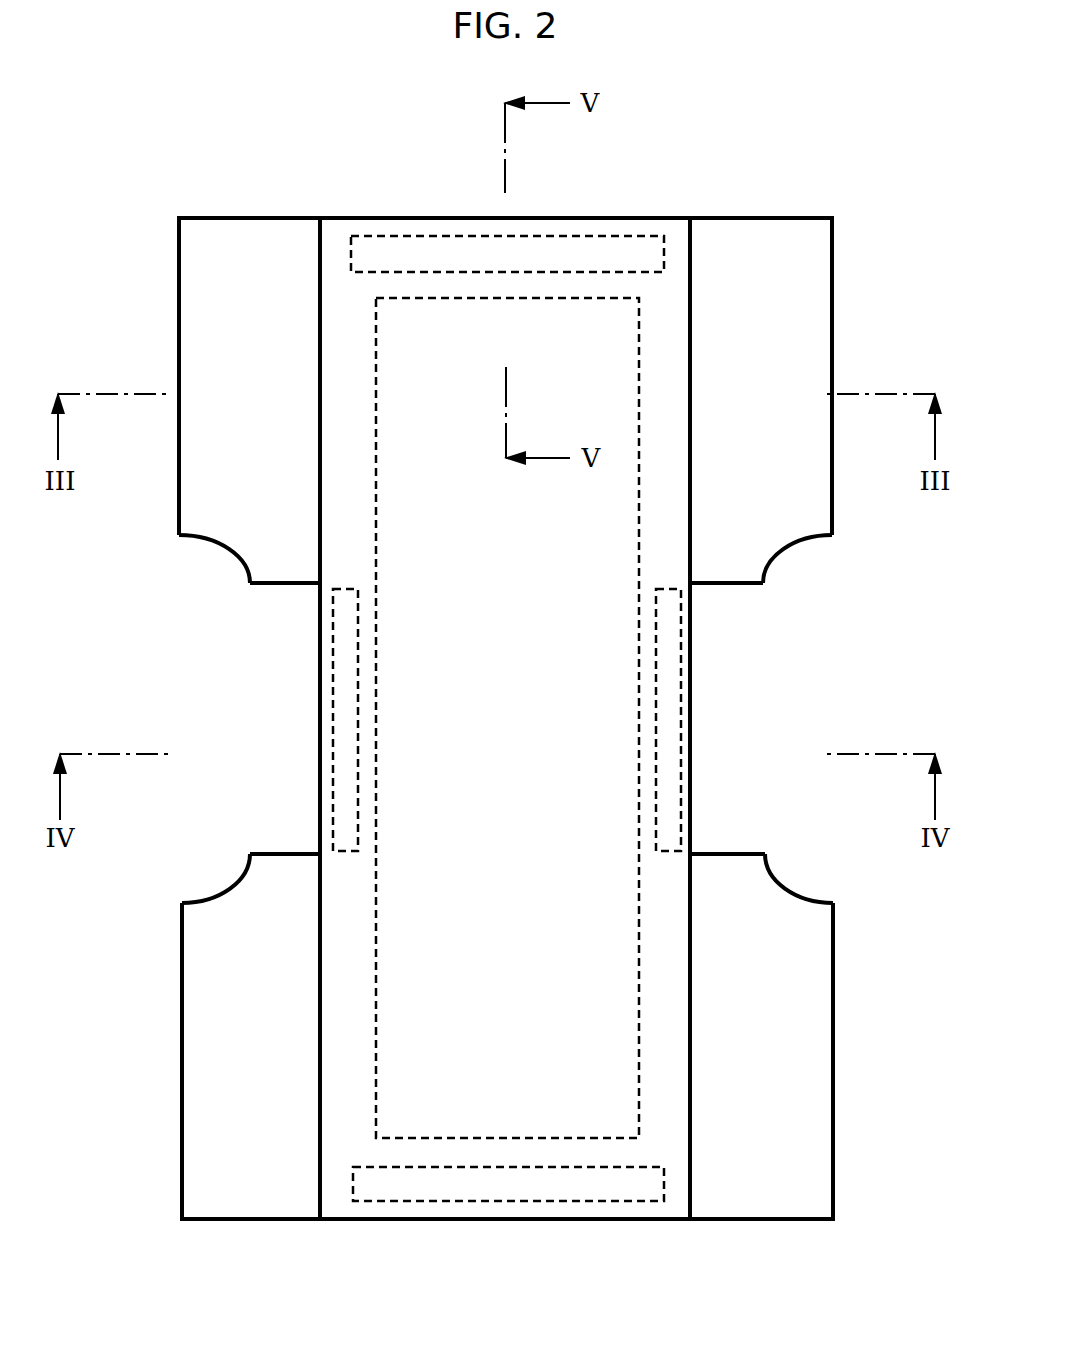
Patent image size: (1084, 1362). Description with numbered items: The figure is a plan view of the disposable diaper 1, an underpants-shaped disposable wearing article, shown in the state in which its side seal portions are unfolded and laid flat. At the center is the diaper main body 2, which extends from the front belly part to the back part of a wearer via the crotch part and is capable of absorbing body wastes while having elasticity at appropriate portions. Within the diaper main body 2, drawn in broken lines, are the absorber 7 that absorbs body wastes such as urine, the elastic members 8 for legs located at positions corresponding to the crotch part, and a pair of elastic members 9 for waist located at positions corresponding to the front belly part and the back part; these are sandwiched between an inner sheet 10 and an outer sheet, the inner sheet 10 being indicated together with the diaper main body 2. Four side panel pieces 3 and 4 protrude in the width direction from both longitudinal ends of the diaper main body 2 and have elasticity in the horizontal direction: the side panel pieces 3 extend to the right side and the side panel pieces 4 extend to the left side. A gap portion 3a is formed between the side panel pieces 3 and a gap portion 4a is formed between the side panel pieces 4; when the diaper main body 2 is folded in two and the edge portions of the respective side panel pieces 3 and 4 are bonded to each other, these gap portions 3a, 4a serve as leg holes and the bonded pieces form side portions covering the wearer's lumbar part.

The disposable diaper 1 is at (502, 659).
The diaper main body 2 is at (505, 683).
The inner sheet 10 is at (638, 222).
The side panel pieces 3 is at (767, 226).
The gap portion 3a is at (780, 818).
The side panel pieces 4 is at (248, 228).
The gap portion 4a is at (230, 823).
The absorber 7 is at (624, 397).
The elastic members for legs 8 is at (340, 710).
The elastic members for waist 9 is at (400, 245).